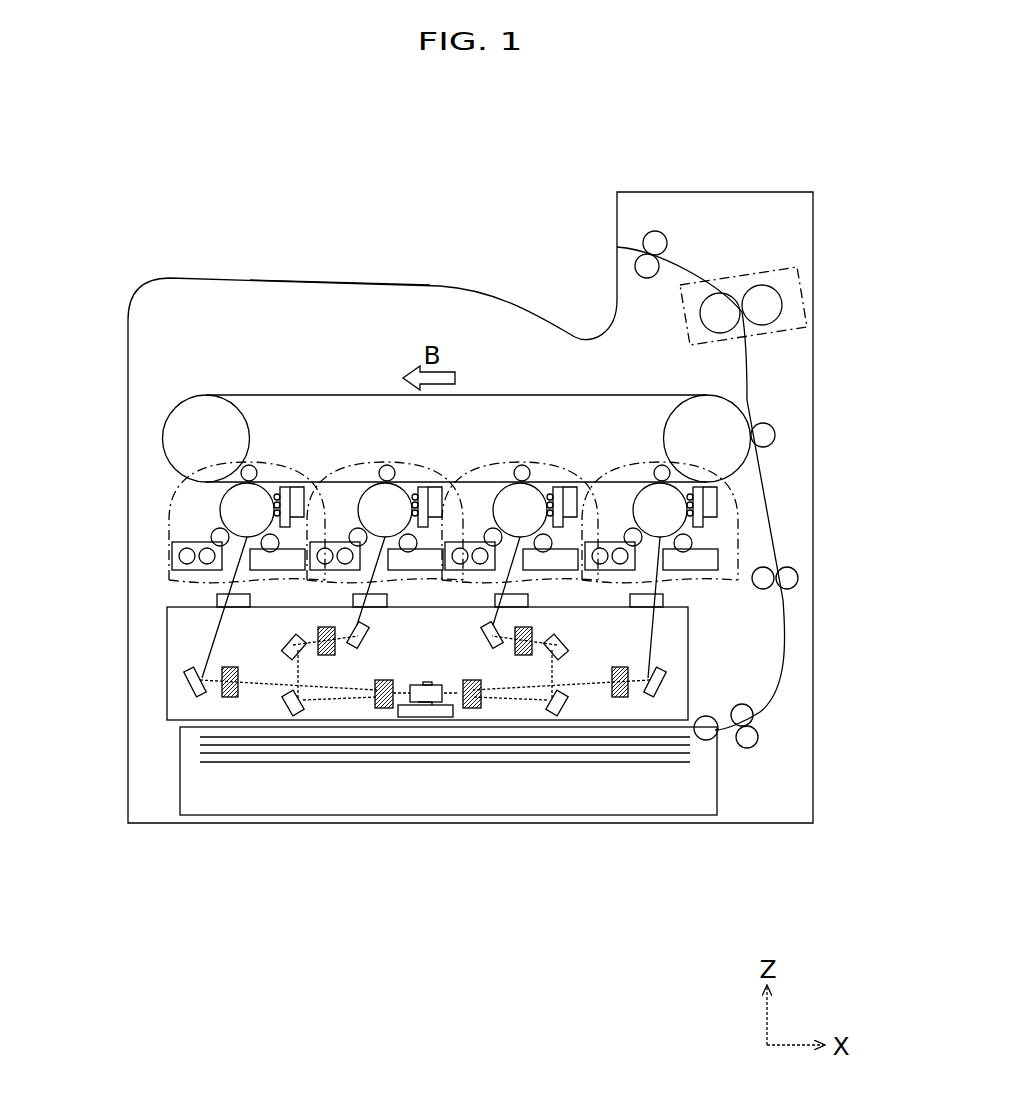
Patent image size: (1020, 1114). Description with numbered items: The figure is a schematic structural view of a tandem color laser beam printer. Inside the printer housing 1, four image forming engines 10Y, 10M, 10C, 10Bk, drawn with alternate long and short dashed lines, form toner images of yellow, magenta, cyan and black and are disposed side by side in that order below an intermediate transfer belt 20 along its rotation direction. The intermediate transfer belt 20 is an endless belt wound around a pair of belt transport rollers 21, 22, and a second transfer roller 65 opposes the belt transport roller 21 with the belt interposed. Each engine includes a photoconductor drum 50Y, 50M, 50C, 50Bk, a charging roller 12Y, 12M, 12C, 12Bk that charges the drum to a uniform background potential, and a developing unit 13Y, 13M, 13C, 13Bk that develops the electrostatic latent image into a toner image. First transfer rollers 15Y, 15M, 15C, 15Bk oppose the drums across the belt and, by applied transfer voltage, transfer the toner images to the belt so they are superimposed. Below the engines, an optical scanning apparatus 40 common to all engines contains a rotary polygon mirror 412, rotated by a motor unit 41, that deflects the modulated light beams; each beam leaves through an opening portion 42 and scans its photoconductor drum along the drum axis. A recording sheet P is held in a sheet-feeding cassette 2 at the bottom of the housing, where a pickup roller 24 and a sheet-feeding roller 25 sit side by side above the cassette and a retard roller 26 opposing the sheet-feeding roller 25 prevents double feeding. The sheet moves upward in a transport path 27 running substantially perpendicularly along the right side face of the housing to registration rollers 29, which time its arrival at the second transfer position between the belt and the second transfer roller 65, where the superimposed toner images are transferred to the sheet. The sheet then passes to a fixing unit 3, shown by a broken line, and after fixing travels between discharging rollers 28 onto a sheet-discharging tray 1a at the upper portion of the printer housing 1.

The printer housing 1 is at (142, 492).
The sheet-discharging tray 1a is at (403, 282).
The sheet-feeding cassette 2 is at (718, 798).
The fixing unit 3 is at (787, 270).
The image forming engine 10Y is at (189, 581).
The image forming engine 10M is at (347, 404).
The image forming engine 10C is at (525, 675).
The image forming engine 10Bk is at (736, 545).
The charging roller 12Y is at (290, 549).
The charging roller 12M is at (426, 549).
The charging roller 12C is at (573, 549).
The charging roller 12Bk is at (783, 528).
The developing unit 13Y is at (143, 536).
The developing unit 13M is at (331, 504).
The developing unit 13C is at (468, 504).
The developing unit 13Bk is at (610, 504).
The first transfer roller 15Y is at (209, 350).
The first transfer roller 15M is at (349, 350).
The first transfer roller 15C is at (491, 358).
The first transfer roller 15Bk is at (607, 350).
The intermediate transfer belt 20 is at (228, 395).
The belt transport roller 21 is at (727, 418).
The belt transport roller 22 is at (187, 425).
The pickup roller 24 is at (706, 741).
The sheet-feeding roller 25 is at (748, 716).
The retard roller 26 is at (752, 737).
The transport path 27 is at (748, 373).
The discharging rollers 28 is at (657, 231).
The registration rollers 29 is at (799, 578).
The optical scanning apparatus 40 is at (700, 653).
The motor unit 41 is at (425, 718).
The rotary polygon mirror 412 is at (413, 684).
The opening portion 42 is at (238, 607).
The photoconductor drum 50Y is at (161, 480).
The photoconductor drum 50M is at (385, 427).
The photoconductor drum 50C is at (533, 445).
The photoconductor drum 50Bk is at (765, 501).
The second transfer roller 65 is at (768, 436).
The recording sheet P is at (480, 765).